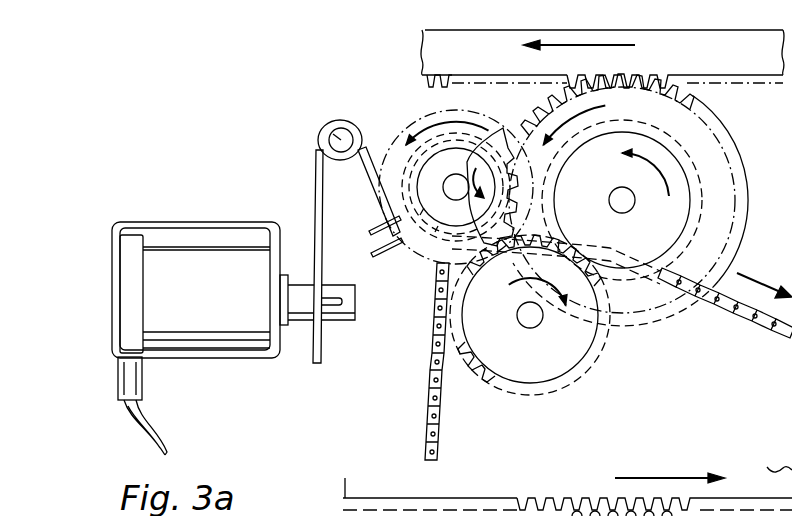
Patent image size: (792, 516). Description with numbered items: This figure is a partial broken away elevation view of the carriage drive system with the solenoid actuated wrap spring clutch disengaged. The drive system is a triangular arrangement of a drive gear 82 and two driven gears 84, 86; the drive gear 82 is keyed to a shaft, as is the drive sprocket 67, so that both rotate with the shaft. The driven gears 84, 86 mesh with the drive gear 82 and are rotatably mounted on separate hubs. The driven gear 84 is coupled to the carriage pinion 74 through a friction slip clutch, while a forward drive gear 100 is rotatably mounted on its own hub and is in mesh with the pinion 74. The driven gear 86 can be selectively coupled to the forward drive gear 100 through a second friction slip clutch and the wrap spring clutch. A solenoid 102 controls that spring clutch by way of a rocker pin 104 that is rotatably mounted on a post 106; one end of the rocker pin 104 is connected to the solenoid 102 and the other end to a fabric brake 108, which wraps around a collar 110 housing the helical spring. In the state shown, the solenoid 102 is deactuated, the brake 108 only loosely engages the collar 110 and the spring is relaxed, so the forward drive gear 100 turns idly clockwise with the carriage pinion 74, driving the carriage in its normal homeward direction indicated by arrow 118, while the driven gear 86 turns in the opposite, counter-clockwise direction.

The drive sprocket 67 is at (470, 388).
The carriage pinion 74 is at (687, 137).
The drive gear 82 is at (558, 370).
The driven gear 84 is at (667, 243).
The driven gear 86 is at (435, 232).
The forward drive gear 100 is at (500, 140).
The solenoid 102 is at (237, 253).
The rocker pin 104 is at (320, 183).
The post 106 is at (323, 130).
The brake 108 is at (407, 170).
The collar 110 is at (420, 215).
The arrow 118 is at (613, 37).